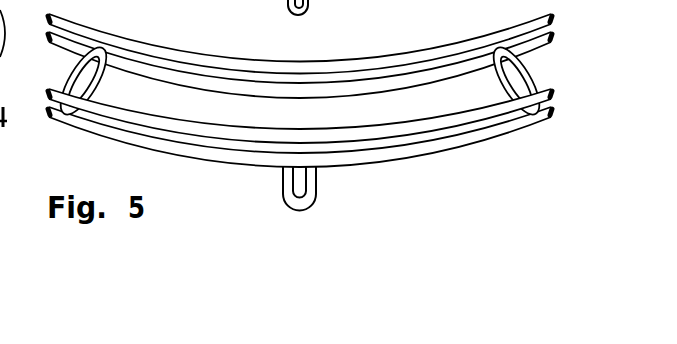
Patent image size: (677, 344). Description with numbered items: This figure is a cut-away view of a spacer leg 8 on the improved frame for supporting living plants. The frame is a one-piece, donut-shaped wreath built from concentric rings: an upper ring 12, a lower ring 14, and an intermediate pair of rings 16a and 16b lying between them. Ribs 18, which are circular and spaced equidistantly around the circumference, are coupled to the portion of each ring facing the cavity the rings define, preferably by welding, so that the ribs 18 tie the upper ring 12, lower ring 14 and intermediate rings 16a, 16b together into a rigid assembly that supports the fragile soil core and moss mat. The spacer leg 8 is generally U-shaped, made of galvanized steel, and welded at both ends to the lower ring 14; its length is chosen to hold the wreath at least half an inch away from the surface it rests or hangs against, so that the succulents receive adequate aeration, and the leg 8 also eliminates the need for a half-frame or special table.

The spacer leg 8 is at (316, 197).
The upper ring 12 is at (180, 45).
The lower ring 14 is at (405, 160).
The intermediate ring 16a is at (555, 32).
The intermediate ring 16b is at (556, 88).
The rib 18 is at (104, 80).